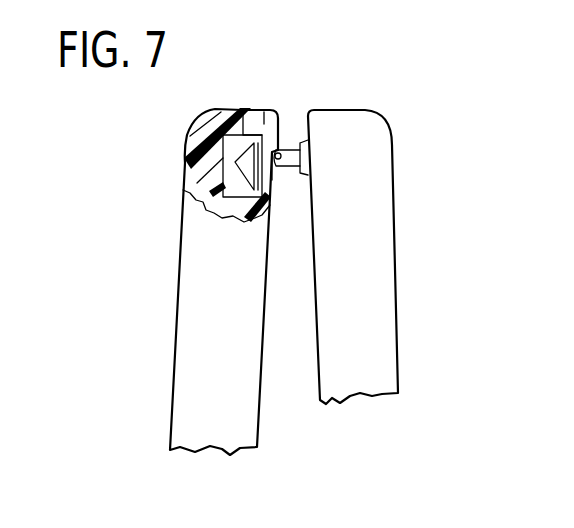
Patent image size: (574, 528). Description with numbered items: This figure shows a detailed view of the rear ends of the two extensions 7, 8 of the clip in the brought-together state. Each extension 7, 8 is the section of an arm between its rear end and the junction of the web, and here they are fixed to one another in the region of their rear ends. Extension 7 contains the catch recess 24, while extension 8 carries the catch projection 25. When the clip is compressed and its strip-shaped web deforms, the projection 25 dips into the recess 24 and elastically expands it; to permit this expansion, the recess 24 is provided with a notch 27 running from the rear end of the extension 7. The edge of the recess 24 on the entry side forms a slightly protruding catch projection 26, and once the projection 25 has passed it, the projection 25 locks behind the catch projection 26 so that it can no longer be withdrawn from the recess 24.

The extension 7 is at (162, 309).
The extension 8 is at (424, 337).
The catch recess 24 is at (240, 197).
The catch projection 25 is at (230, 108).
The catch projection 26 is at (302, 152).
The notch 27 is at (264, 110).